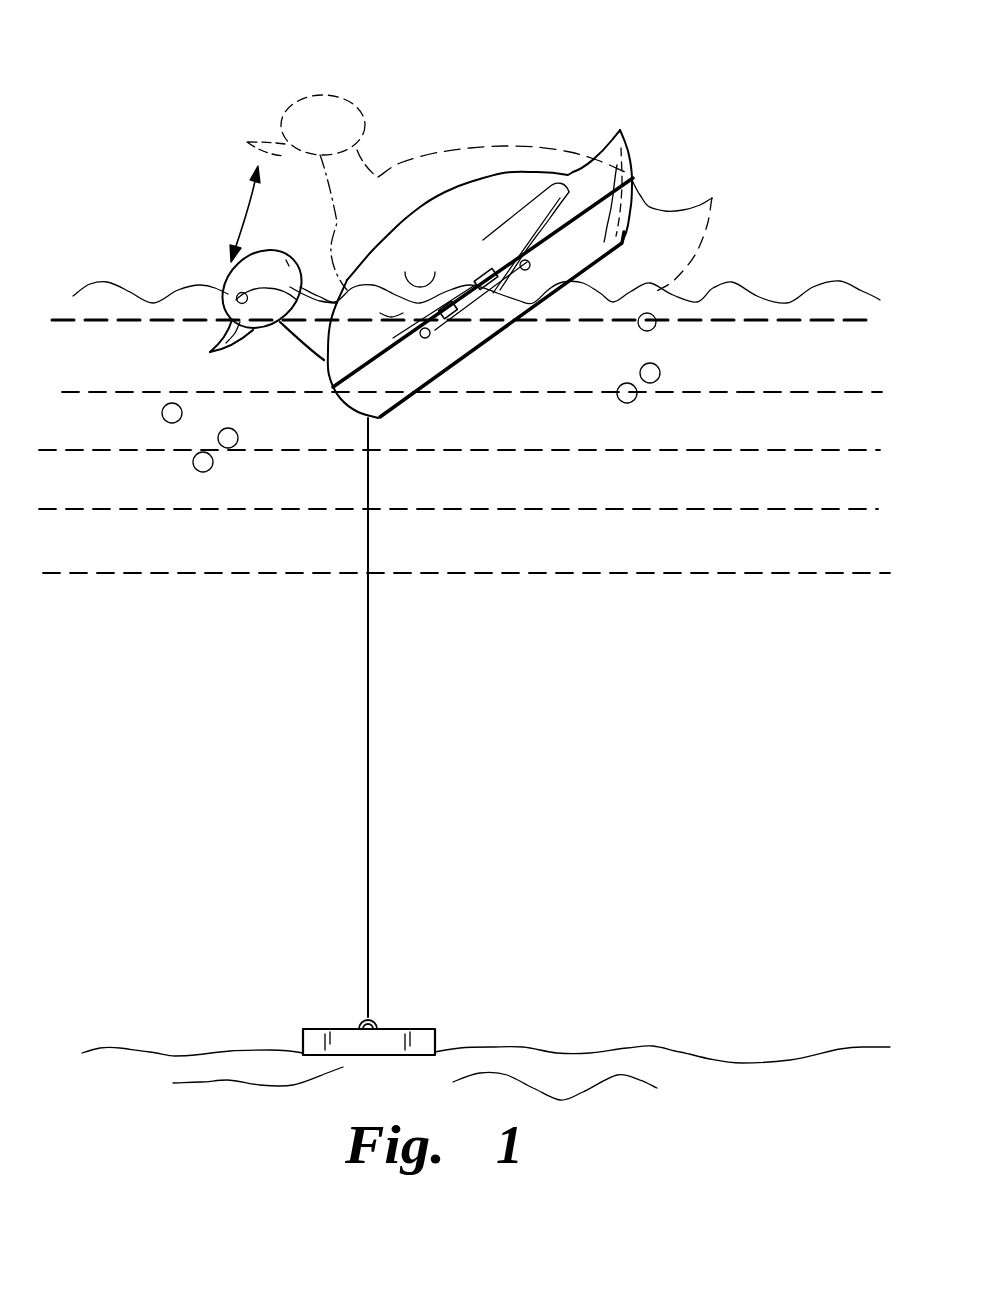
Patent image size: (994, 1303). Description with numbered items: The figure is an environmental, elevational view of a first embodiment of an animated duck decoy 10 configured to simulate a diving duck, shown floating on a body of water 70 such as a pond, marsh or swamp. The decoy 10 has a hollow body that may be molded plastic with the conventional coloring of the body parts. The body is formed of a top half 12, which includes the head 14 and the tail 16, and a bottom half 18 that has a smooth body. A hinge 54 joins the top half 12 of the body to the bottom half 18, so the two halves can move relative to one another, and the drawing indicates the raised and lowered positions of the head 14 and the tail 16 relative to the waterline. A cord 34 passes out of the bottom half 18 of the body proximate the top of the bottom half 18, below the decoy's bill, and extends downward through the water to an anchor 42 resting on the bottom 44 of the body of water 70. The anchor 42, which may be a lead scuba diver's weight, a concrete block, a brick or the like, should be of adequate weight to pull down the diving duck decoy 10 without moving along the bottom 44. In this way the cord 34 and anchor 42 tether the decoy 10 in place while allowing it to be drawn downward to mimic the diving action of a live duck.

The animated duck decoy 10 is at (481, 95).
The top half 12 is at (465, 253).
The head 14 is at (235, 277).
The tail 16 is at (625, 142).
The bottom half 18 is at (585, 273).
The cord 34 is at (372, 723).
The anchor 42 is at (345, 1028).
The bottom 44 is at (655, 1045).
The hinge 54 is at (484, 288).
The body of water 70 is at (712, 686).